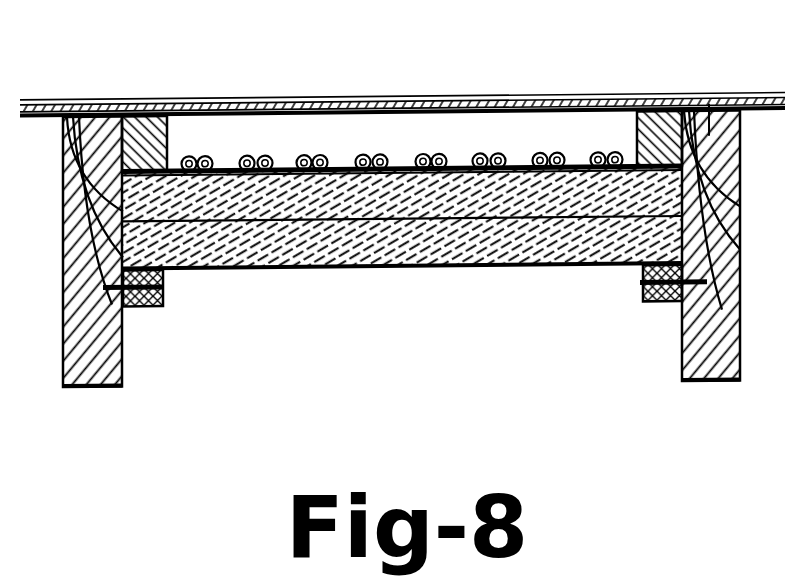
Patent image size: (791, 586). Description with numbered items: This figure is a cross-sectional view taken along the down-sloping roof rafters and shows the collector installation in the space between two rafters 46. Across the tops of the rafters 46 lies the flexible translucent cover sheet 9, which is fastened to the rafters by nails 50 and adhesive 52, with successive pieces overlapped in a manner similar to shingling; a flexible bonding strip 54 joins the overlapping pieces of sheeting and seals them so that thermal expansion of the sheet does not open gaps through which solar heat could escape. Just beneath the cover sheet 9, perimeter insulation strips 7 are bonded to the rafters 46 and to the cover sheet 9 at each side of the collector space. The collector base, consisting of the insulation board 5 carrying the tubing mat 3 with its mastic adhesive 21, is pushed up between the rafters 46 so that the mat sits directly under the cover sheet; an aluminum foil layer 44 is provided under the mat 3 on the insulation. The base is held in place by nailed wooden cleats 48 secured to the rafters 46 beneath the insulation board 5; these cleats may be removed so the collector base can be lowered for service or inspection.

The tubing mat 3 is at (262, 140).
The insulation board 5 is at (402, 176).
The perimeter insulation strip 7 is at (655, 120).
The translucent cover sheet 9 is at (382, 108).
The mastic adhesive 21 is at (462, 167).
The aluminum foil layer 44 is at (410, 182).
The roof rafter 46 is at (692, 352).
The wooden cleat 48 is at (148, 310).
The nail 50 is at (93, 117).
The adhesive 52 is at (131, 143).
The flexible bonding strip 54 is at (402, 70).